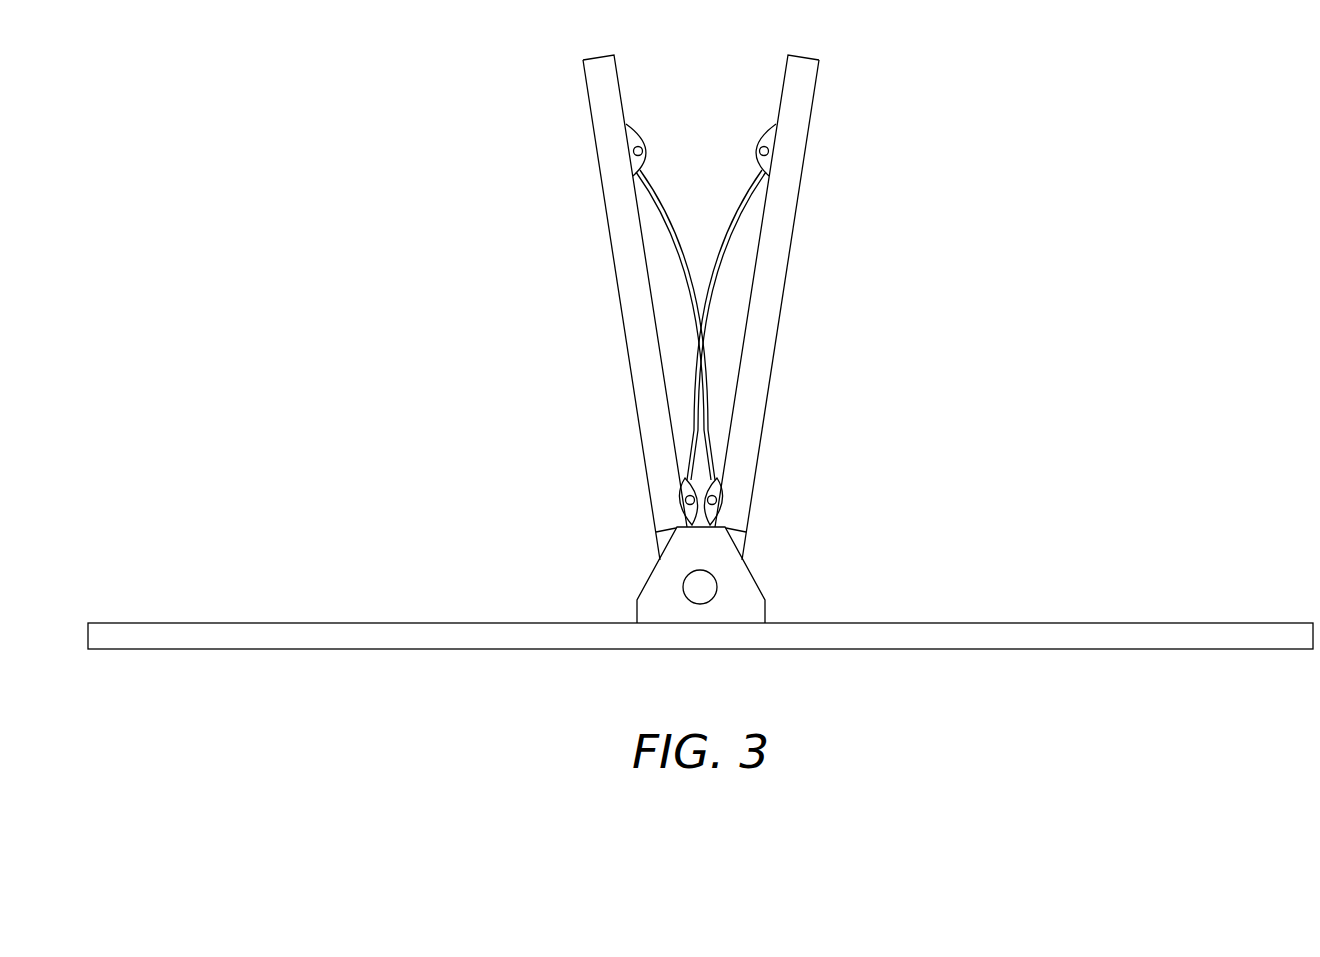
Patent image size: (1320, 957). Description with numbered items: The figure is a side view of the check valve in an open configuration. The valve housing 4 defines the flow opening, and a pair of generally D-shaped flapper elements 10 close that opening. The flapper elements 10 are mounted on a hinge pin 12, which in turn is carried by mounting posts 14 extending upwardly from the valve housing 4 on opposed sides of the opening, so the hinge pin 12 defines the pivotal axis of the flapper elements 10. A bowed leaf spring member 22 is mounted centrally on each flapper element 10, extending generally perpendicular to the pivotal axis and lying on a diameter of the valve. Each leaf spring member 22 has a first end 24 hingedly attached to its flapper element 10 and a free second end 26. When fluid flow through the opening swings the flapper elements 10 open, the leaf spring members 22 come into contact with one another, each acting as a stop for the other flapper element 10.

The valve housing 4 is at (303, 637).
The flapper element 10 is at (632, 327).
The hinge pin 12 is at (704, 593).
The mounting post 14 is at (657, 608).
The leaf spring member 22 is at (657, 230).
The first end 24 is at (678, 498).
The second end 26 is at (630, 125).